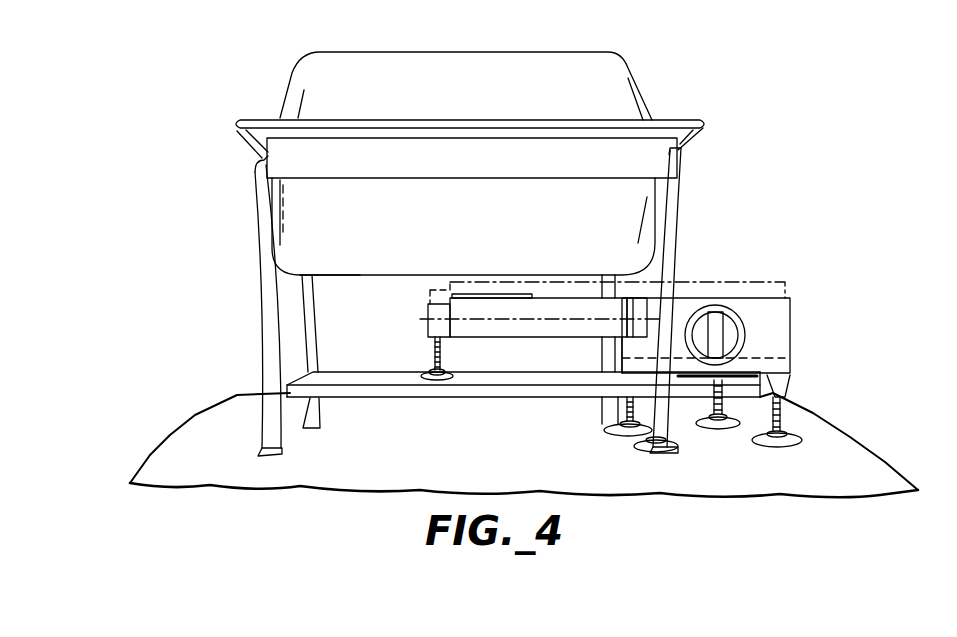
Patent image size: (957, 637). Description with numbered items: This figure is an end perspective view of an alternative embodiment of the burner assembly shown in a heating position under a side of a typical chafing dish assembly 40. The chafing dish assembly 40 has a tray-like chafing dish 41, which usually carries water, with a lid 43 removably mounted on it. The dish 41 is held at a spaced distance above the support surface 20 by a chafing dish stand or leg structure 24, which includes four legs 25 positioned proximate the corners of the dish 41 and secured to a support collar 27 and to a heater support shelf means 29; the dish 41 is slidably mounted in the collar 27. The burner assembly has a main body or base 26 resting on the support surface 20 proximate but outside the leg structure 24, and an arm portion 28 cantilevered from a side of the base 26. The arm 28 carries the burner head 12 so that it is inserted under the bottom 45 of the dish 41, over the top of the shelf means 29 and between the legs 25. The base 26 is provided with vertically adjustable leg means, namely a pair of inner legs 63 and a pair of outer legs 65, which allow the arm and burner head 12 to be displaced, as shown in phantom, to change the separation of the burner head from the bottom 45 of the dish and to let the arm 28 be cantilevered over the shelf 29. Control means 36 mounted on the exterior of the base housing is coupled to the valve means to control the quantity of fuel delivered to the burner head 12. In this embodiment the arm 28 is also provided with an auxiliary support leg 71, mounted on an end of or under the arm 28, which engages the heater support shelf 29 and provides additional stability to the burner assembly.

The burner head 12 is at (488, 293).
The support surface 20 is at (885, 478).
The chafing dish stand or leg structure 24 is at (248, 256).
The legs 25 is at (275, 342).
The main body or base 26 is at (793, 329).
The support collar 27 is at (325, 173).
The arm portion 28 is at (560, 281).
The heater support shelf means 29 is at (378, 378).
The control means 36 is at (723, 335).
The chafing dish assembly 40 is at (742, 127).
The chafing dish 41 is at (648, 227).
The lid 43 is at (618, 79).
The bottom 45 is at (320, 278).
The inner legs 63 is at (635, 448).
The outer legs 65 is at (778, 428).
The auxiliary support leg 71 is at (426, 322).